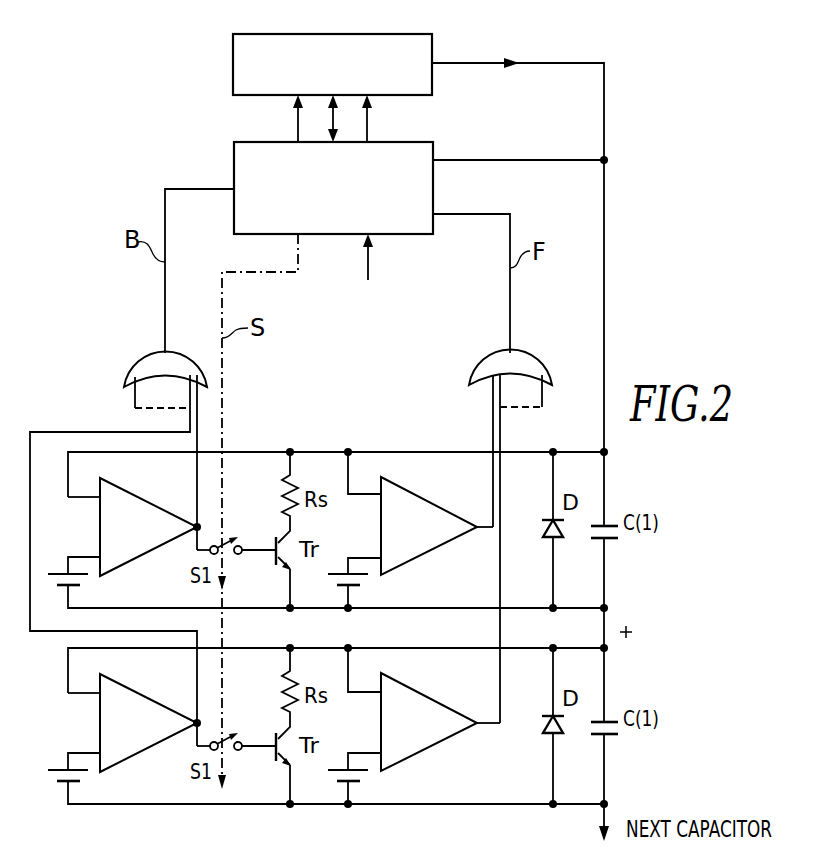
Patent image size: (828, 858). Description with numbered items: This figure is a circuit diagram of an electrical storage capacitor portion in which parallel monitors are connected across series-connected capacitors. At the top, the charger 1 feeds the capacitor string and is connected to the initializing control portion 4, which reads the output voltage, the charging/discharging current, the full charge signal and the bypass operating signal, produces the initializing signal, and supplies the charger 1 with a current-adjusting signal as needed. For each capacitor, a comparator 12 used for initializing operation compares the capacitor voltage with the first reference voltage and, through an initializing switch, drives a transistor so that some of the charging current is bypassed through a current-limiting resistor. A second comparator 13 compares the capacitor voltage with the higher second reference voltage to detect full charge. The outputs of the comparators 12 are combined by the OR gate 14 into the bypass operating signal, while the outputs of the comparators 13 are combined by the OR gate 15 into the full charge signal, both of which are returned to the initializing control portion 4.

The charger 1 is at (432, 45).
The initializing control portion 4 is at (234, 147).
The comparator used for initializing operation 12 is at (128, 492).
The comparator used for detection of full charge 13 is at (420, 492).
The OR gate 14 is at (178, 354).
The OR gate 15 is at (534, 356).